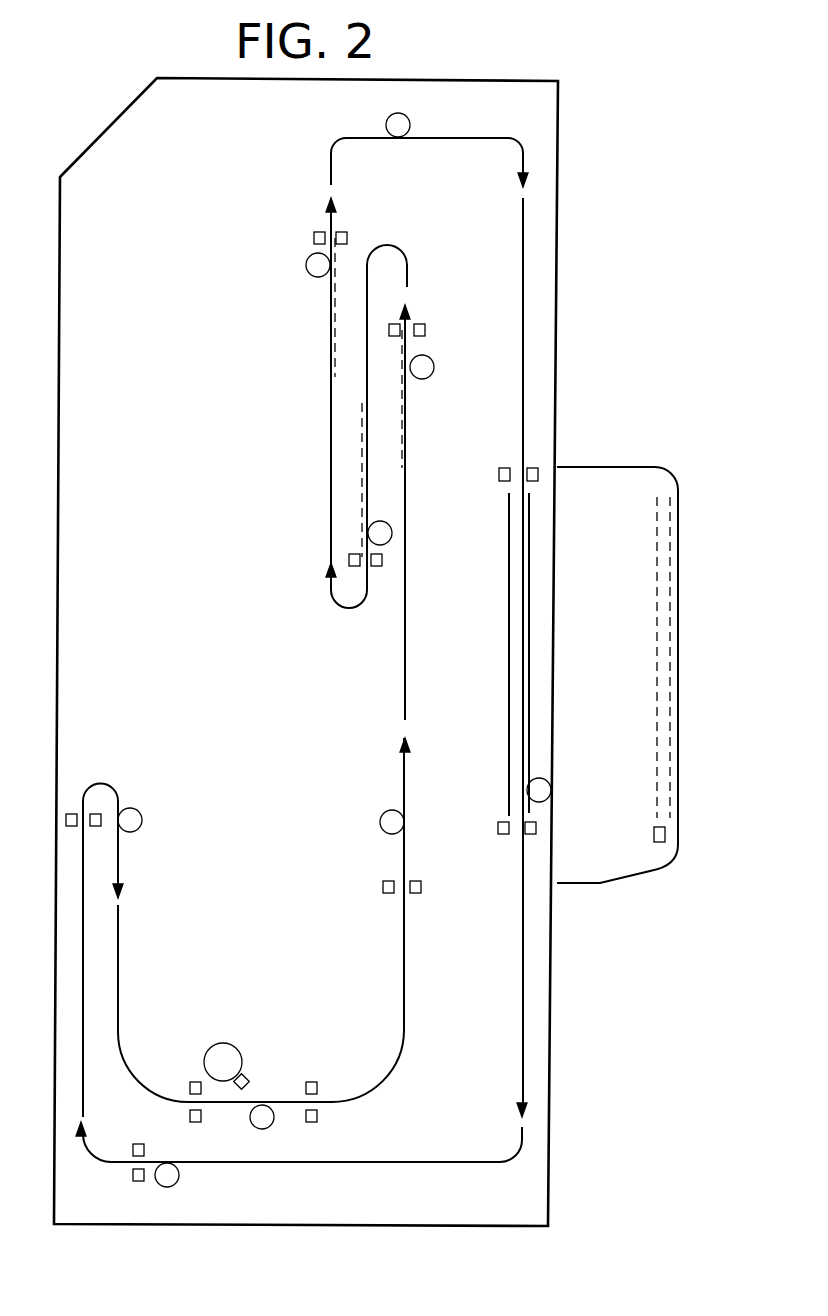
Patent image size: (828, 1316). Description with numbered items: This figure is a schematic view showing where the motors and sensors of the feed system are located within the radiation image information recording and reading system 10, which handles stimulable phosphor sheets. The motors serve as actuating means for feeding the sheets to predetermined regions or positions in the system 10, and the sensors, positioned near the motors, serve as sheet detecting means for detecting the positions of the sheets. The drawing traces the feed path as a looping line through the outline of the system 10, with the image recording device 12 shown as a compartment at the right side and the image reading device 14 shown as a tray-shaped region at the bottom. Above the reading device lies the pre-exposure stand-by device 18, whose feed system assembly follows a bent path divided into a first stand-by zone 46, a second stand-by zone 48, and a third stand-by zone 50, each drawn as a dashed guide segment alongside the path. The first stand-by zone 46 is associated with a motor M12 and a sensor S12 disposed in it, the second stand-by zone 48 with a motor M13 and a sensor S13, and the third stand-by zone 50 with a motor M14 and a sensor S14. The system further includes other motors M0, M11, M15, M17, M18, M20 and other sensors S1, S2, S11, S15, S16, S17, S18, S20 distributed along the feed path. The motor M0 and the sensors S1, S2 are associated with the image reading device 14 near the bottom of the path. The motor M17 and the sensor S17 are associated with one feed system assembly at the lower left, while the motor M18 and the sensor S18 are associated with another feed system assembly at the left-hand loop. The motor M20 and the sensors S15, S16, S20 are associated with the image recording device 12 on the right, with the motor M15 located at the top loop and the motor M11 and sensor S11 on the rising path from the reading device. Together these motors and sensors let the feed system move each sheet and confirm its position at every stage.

The radiation image information recording and reading system 10 is at (588, 203).
The image recording device 12 is at (657, 458).
The image reading device 14 is at (261, 1010).
The pre-exposure stand-by device 18 is at (303, 424).
The first stand-by zone 46 is at (406, 434).
The second stand-by zone 48 is at (358, 477).
The third stand-by zone 50 is at (328, 337).
The motor M0 is at (269, 1118).
The motor M11 is at (386, 820).
The motor M12 is at (430, 378).
The motor M13 is at (388, 523).
The motor M14 is at (310, 273).
The motor M15 is at (410, 122).
The motor M17 is at (179, 1180).
The motor M18 is at (141, 823).
The motor M20 is at (551, 788).
The sensor S1 is at (203, 1118).
The sensor S2 is at (320, 1117).
The sensor S11 is at (418, 882).
The sensor S12 is at (424, 325).
The sensor S13 is at (376, 566).
The sensor S14 is at (348, 237).
The sensor S15 is at (499, 482).
The sensor S16 is at (503, 836).
The sensor S17 is at (139, 1146).
The sensor S18 is at (72, 812).
The sensor S20 is at (660, 843).